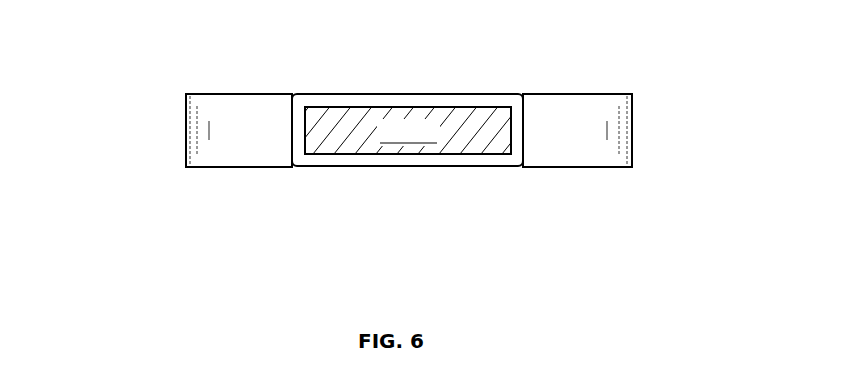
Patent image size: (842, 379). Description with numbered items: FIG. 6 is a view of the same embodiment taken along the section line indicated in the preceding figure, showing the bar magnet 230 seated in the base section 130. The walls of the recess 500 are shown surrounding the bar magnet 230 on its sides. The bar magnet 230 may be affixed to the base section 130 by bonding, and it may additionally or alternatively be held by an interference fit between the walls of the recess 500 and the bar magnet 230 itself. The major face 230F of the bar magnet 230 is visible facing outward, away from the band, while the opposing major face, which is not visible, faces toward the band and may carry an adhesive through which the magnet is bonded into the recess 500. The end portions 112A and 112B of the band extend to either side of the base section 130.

The first end portion 112A is at (160, 133).
The second end portion 112B is at (658, 133).
The base section 130 is at (495, 168).
The bar magnet 230 is at (343, 110).
The major face 230F is at (408, 132).
The recess 500 is at (360, 157).